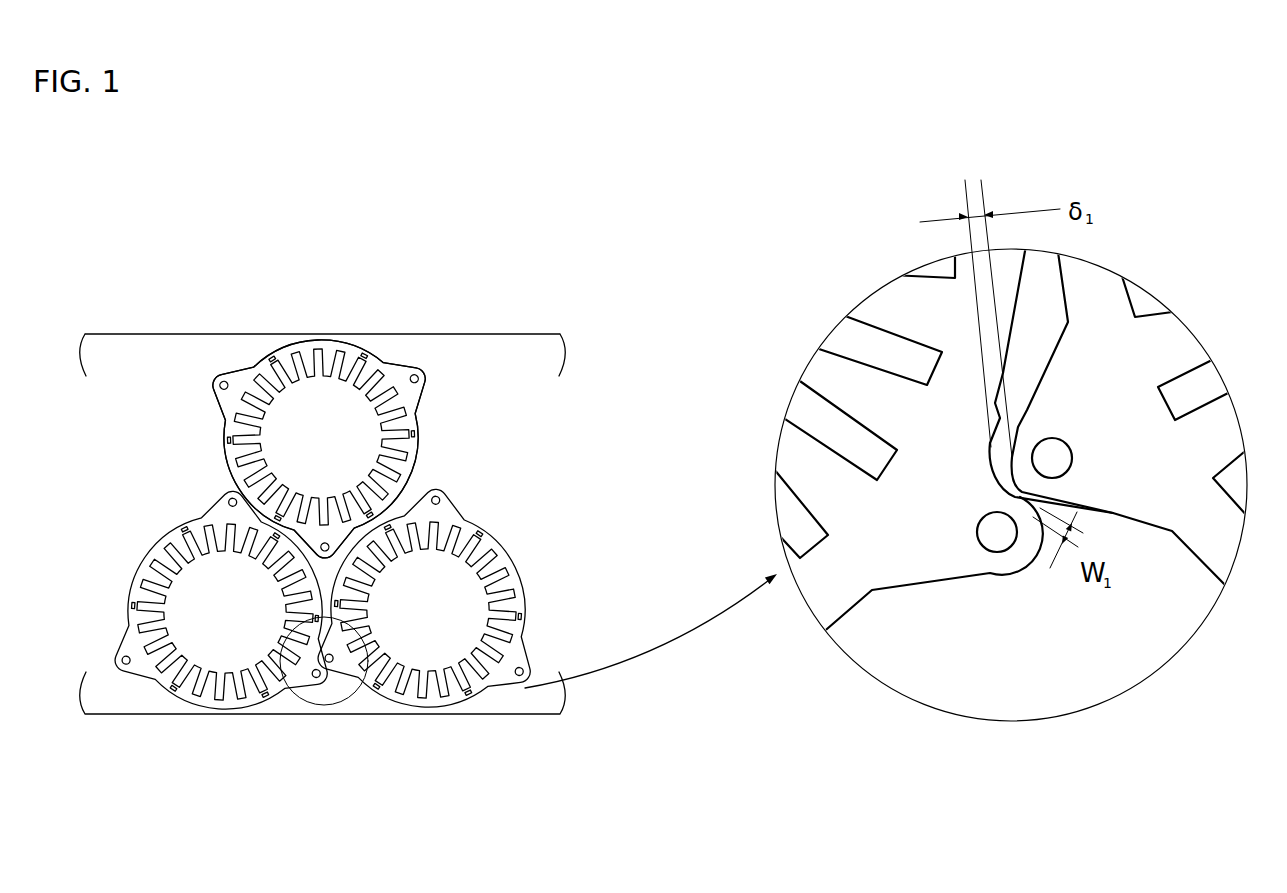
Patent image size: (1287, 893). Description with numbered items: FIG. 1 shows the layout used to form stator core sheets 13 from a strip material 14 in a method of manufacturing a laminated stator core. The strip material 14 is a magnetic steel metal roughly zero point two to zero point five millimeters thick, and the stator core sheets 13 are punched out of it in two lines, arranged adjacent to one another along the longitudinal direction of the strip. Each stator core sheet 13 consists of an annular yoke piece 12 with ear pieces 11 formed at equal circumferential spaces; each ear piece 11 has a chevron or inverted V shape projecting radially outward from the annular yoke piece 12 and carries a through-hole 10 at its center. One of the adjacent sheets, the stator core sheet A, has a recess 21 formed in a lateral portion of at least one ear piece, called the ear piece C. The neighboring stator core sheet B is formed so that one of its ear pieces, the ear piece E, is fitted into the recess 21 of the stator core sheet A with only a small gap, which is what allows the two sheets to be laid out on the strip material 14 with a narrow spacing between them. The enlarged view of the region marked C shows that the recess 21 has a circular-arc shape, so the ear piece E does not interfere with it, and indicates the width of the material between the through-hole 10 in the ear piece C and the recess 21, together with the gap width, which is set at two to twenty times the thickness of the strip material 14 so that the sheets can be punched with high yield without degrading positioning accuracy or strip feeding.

The through-hole 10 is at (223, 390).
The ear piece 11 is at (237, 390).
The annular yoke piece 12 is at (327, 345).
The stator core sheet 13 is at (717, 475).
The strip material 14 is at (115, 362).
The recess 21 is at (1017, 492).
The stator core sheet A is at (196, 708).
The stator core sheet B is at (447, 707).
The ear piece C is at (305, 672).
The ear piece E is at (1043, 408).